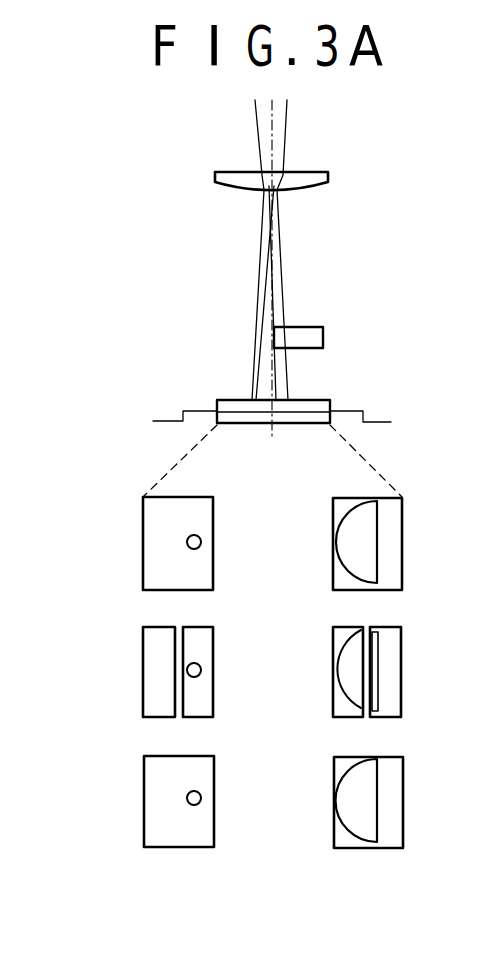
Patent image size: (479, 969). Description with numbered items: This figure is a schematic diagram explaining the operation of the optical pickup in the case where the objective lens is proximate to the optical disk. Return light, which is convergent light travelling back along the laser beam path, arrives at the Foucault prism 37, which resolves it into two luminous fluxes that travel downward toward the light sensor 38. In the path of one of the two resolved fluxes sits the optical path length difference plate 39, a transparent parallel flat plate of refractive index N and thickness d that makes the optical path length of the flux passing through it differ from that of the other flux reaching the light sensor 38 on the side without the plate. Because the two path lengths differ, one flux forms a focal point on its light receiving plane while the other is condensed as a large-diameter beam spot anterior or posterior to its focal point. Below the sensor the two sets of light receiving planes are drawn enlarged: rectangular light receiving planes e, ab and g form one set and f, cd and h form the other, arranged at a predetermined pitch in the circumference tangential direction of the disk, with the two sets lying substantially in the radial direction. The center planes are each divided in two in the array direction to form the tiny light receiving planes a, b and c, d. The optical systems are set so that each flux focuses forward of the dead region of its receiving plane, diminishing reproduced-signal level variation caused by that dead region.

The Foucault prism 37 is at (215, 174).
The light sensor 38 is at (226, 400).
The optical path length difference plate 39 is at (323, 334).
The tiny light receiving plane a is at (159, 672).
The tiny light receiving plane b is at (205, 647).
The tiny light receiving plane c is at (338, 703).
The tiny light receiving plane d is at (392, 658).
The rectangular light receiving plane e is at (178, 543).
The rectangular light receiving plane f is at (390, 538).
The rectangular light receiving plane g is at (179, 801).
The rectangular light receiving plane h is at (392, 798).